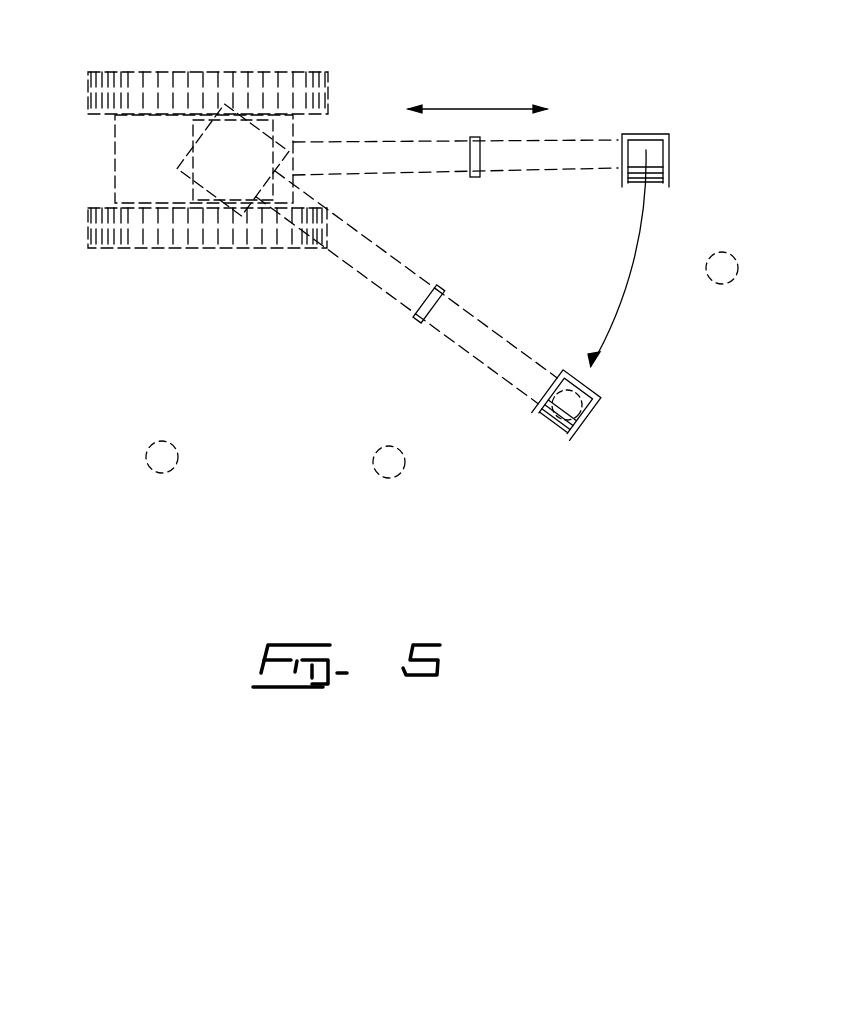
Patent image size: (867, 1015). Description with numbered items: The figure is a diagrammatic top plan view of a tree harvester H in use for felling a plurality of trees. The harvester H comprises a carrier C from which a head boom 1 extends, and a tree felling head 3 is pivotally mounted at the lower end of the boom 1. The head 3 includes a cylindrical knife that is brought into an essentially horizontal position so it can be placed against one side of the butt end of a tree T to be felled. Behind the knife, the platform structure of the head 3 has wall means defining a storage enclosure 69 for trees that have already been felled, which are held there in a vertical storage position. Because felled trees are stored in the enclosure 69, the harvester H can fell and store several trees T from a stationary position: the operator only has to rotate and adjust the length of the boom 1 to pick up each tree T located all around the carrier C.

The carrier C is at (216, 70).
The head boom 1 is at (566, 138).
The tree felling head 3 is at (650, 135).
The tree harvester H is at (297, 266).
The storage enclosure 69 is at (601, 406).
The tree T is at (175, 460).